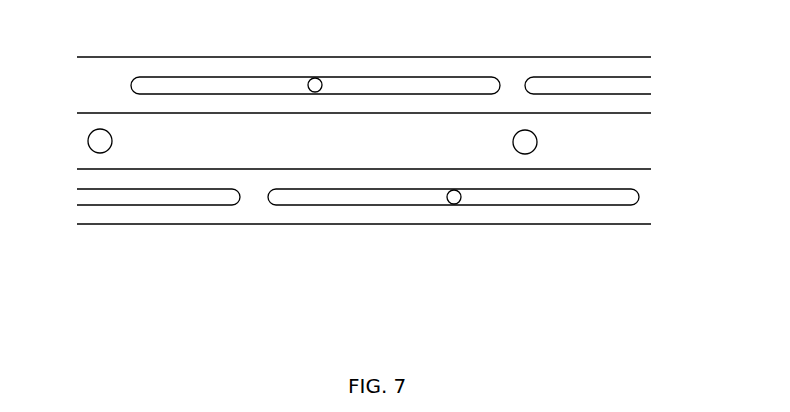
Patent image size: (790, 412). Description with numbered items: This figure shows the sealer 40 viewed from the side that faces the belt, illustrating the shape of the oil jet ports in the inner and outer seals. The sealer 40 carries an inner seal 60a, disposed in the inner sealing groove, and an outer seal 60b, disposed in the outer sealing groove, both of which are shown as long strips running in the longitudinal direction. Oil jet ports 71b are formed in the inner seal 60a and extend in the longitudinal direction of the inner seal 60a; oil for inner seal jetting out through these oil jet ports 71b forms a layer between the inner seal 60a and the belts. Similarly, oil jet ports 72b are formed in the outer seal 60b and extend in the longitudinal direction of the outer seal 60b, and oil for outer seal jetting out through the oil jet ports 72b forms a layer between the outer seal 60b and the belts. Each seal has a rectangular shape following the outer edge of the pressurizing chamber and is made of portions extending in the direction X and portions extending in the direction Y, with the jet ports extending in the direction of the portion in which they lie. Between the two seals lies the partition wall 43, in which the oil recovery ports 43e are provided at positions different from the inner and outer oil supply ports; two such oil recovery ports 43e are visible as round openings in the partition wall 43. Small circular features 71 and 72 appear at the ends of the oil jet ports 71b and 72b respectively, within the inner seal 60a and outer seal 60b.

The sealer 40 is at (656, 57).
The partition wall 43 is at (334, 151).
The oil recovery ports 43e is at (88, 140).
The second engagement portion 72 is at (309, 87).
The oil jet ports 72b is at (378, 77).
The outer seal 60b is at (508, 72).
The inner seal 60a is at (255, 210).
The first engagement portion 71 is at (448, 202).
The oil jet ports 71b is at (155, 205).